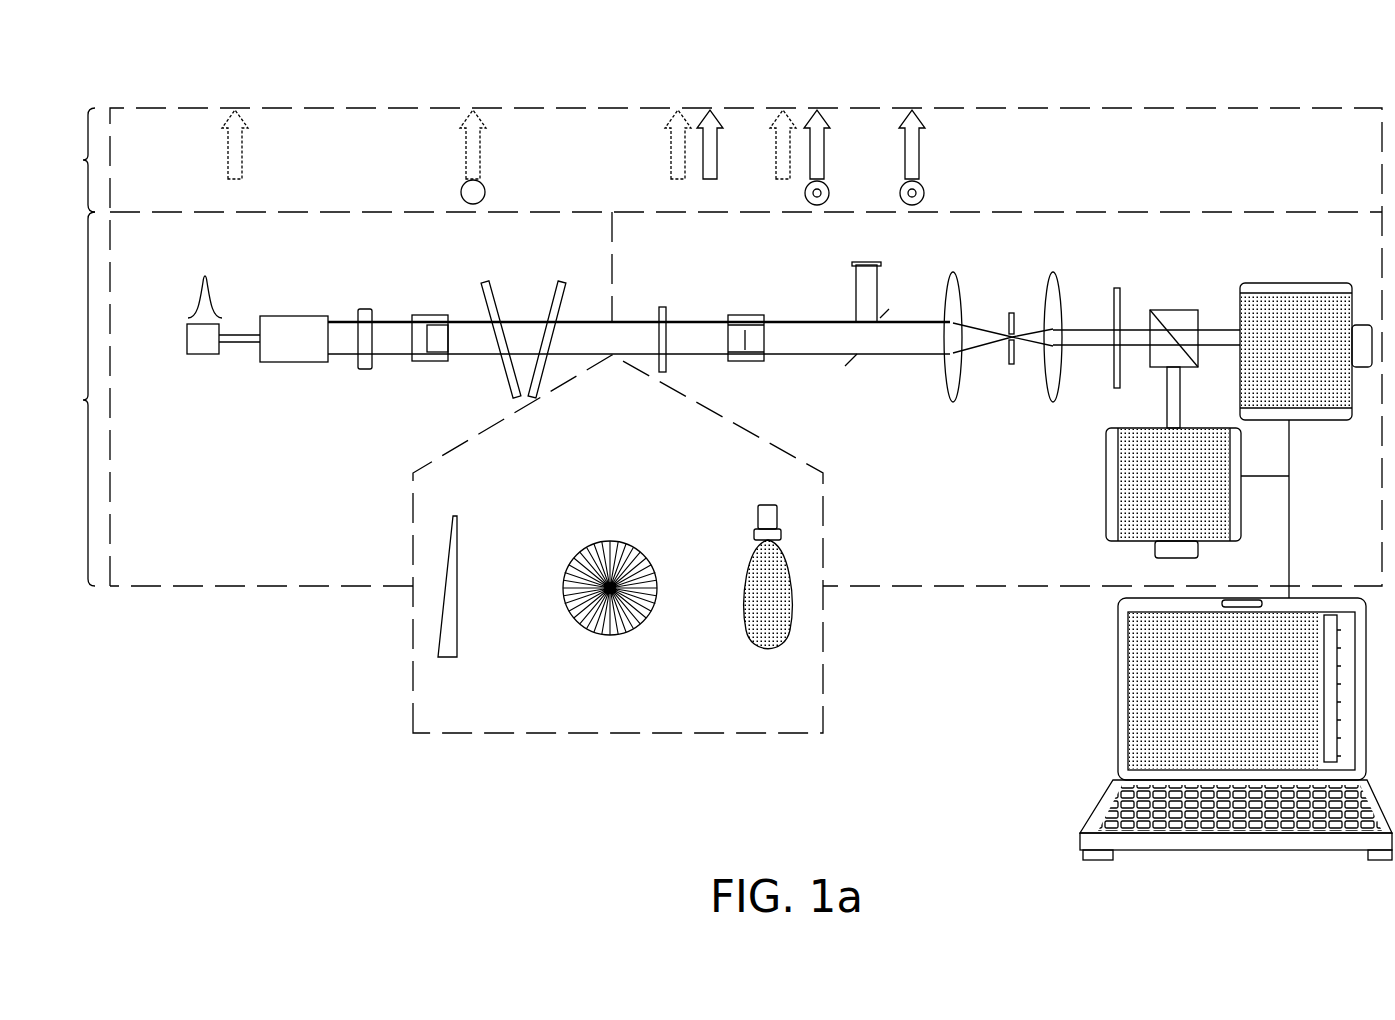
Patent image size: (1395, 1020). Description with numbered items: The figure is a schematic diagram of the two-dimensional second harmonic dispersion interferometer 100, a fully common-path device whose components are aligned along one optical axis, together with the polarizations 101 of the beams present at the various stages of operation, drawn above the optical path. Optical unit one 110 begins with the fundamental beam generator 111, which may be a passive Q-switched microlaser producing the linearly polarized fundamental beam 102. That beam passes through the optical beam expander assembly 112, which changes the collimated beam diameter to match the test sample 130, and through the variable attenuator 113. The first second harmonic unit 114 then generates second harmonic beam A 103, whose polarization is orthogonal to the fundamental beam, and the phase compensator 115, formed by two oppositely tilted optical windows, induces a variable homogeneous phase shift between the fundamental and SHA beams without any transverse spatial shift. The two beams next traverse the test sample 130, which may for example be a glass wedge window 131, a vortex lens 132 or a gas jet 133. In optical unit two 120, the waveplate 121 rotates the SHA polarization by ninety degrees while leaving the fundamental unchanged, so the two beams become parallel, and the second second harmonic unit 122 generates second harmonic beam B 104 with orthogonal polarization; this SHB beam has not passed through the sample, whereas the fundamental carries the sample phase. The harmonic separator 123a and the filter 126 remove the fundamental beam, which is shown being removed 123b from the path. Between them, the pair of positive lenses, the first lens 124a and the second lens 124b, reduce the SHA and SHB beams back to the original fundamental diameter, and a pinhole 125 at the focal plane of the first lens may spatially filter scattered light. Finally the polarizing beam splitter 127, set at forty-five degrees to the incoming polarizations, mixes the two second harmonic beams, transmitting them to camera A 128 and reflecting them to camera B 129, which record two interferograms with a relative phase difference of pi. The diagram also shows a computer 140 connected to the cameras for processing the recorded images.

The two-dimensional second harmonic dispersion interferometer 100 is at (709, 347).
The polarizations 101 is at (709, 160).
The fundamental beam 102 is at (252, 112).
The second harmonic beam A 103 is at (490, 182).
The second harmonic beam B 104 is at (830, 183).
The optical unit #1 110 is at (247, 606).
The fundamental beam generator 111 is at (200, 361).
The optical beam expander assembly 112 is at (281, 371).
The variable attenuator 113 is at (365, 376).
The second harmonic unit 1 114 is at (423, 312).
The phase compensator 115 is at (549, 282).
The optical unit #2 120 is at (905, 598).
The waveplate 121 is at (660, 303).
The second harmonic unit 2 122 is at (738, 312).
The harmonic separator 123a is at (855, 368).
The removed fundamental beam 123b is at (848, 280).
The lens 1 124a is at (968, 284).
The lens 2 124b is at (1068, 296).
The pinhole 125 is at (1010, 376).
The filter 126 is at (1112, 371).
The polarizing beam splitter 127 is at (1182, 306).
The camera A 128 is at (1318, 431).
The camera B 129 is at (1093, 487).
The test sample 130 is at (572, 746).
The glass wedge window 131 is at (435, 629).
The vortex lens 132 is at (558, 613).
The gas jet 133 is at (781, 663).
The PC 140 is at (1102, 753).